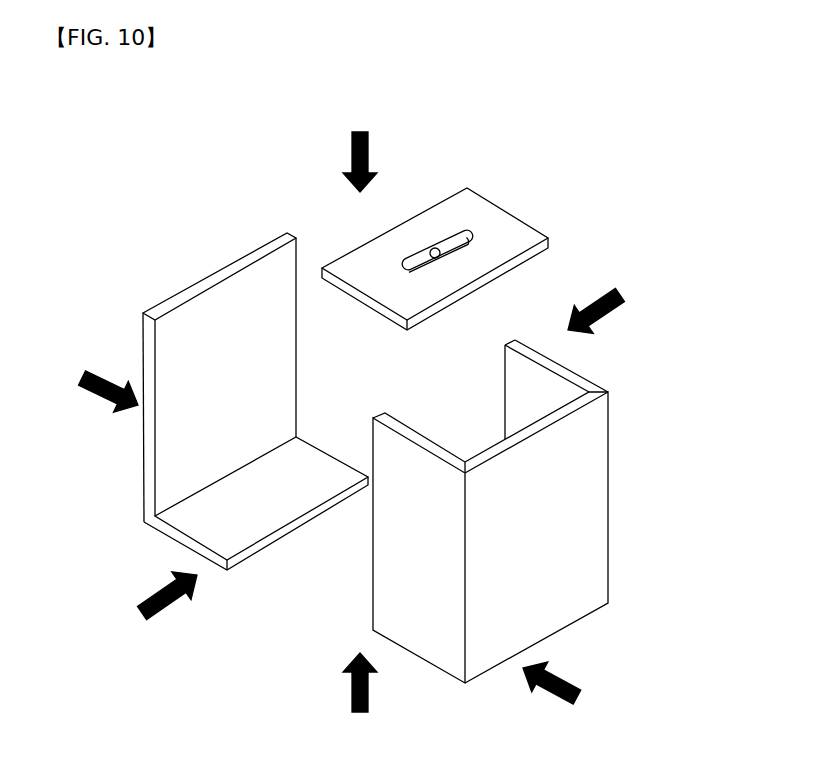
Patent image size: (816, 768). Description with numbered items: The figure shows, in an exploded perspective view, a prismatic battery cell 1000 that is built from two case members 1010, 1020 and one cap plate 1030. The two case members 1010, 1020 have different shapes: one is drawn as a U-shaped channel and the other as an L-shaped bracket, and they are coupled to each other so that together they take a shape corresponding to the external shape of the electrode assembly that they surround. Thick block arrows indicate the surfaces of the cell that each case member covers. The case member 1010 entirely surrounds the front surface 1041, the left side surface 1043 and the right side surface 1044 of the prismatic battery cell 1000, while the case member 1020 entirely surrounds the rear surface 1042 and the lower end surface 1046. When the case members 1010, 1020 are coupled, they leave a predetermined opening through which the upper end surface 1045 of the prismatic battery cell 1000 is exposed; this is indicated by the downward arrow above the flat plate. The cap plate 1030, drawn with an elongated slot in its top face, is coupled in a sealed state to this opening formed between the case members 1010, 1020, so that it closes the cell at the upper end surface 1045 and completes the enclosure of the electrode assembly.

The prismatic battery cell 1000 is at (127, 144).
The case member 1010 is at (594, 361).
The case member 1020 is at (190, 264).
The cap plate 1030 is at (492, 227).
The front surface 1041 is at (574, 690).
The rear surface 1042 is at (85, 387).
The left side surface 1043 is at (144, 602).
The right side surface 1044 is at (618, 307).
The upper end surface 1045 is at (359, 151).
The lower end surface 1046 is at (356, 697).